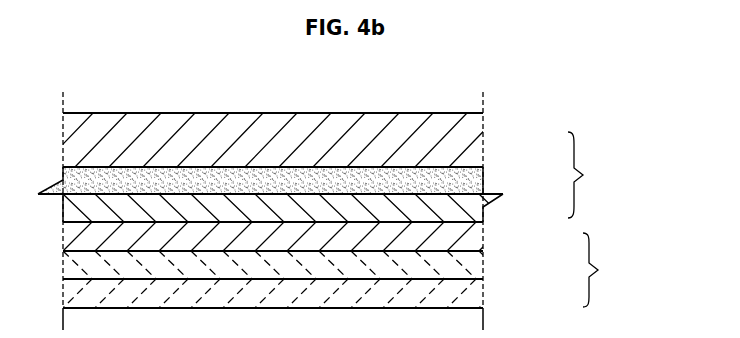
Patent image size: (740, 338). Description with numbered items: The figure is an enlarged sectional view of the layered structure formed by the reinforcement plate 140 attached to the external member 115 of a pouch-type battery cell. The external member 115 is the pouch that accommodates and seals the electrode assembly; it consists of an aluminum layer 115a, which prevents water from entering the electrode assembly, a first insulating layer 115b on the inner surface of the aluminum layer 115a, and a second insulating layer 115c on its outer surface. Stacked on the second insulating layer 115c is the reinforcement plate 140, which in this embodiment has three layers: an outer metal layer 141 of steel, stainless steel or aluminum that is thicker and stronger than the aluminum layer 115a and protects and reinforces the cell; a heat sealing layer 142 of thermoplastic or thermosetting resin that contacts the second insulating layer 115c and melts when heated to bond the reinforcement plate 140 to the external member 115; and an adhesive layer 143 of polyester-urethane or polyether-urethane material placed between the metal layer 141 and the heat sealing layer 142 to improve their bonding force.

The metal layer 141 is at (478, 142).
The adhesive layer 143 is at (480, 180).
The heat sealing layer 142 is at (482, 212).
The reinforcement plate 140 is at (597, 175).
The second insulating layer 115c is at (480, 241).
The aluminum layer 115a is at (480, 269).
The first insulating layer 115b is at (480, 297).
The external member 115 is at (611, 270).